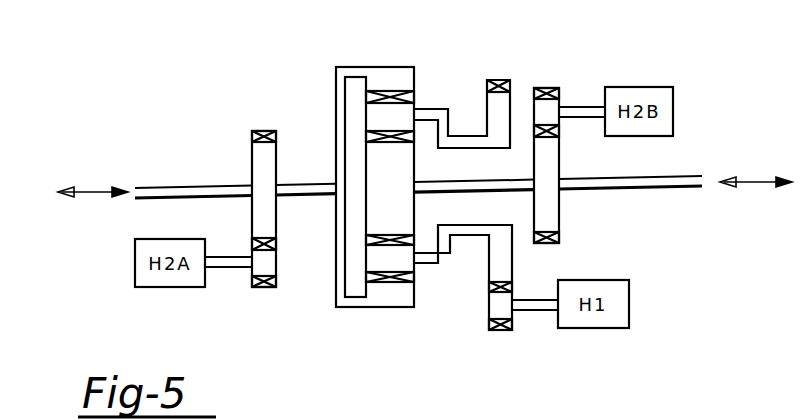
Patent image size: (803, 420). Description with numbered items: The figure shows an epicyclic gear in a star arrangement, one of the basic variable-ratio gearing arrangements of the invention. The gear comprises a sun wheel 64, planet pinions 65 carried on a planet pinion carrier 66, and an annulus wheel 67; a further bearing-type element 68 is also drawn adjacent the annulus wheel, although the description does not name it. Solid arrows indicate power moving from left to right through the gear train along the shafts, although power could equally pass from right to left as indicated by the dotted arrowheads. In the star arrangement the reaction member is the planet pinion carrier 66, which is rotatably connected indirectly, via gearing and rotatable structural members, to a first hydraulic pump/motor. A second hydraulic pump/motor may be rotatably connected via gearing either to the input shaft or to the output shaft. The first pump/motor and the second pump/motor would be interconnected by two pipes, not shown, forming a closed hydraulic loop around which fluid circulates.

The sun wheel 64 is at (383, 181).
The planet pinion 65 is at (382, 260).
The planet pinion carrier 66 is at (450, 112).
The annulus wheel 67 is at (403, 78).
The upper bearing 68 is at (403, 115).